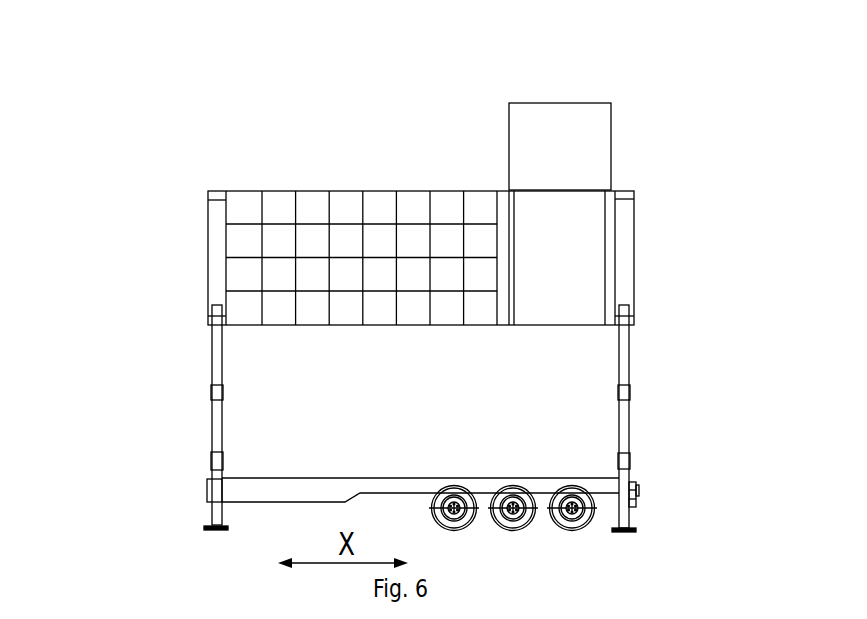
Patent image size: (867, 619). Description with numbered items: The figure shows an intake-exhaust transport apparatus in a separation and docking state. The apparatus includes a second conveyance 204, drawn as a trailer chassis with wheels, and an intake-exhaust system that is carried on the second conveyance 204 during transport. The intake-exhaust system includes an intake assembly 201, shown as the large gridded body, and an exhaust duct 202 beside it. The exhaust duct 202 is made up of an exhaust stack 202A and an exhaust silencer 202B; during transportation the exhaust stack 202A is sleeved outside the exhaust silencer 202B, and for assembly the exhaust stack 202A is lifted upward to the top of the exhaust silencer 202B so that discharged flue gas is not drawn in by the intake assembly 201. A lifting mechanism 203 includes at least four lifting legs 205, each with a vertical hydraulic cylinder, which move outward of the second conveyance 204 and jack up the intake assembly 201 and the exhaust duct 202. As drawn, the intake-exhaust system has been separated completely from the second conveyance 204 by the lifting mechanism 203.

The intake assembly 201 is at (285, 190).
The exhaust duct 202 is at (627, 171).
The exhaust stack 202A is at (552, 97).
The exhaust silencer 202B is at (592, 240).
The lifting mechanism 203 is at (335, 418).
The lifting legs 205 is at (195, 377).
The second conveyance 204 is at (190, 490).